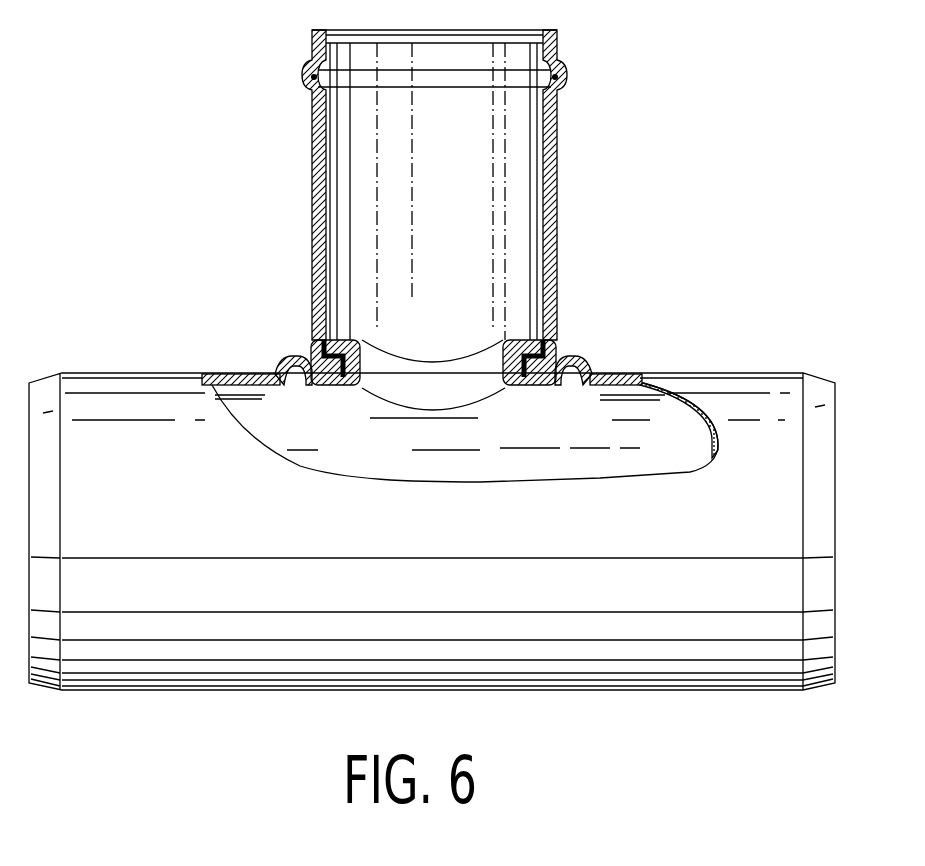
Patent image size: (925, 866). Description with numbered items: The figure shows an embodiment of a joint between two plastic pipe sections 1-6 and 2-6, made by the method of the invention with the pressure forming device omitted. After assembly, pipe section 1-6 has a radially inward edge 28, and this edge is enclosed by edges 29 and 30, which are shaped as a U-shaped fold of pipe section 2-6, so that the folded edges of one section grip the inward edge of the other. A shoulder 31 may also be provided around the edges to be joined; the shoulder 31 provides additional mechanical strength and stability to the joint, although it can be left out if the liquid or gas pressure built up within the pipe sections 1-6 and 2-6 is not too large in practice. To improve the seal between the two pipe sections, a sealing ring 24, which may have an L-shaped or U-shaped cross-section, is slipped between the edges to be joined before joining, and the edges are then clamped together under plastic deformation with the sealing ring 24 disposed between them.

The pipe section 1-6 is at (545, 163).
The pipe section 2-6 is at (730, 398).
The sealing ring 24 is at (517, 390).
The radially inward edge 28 is at (322, 392).
The edge 29 is at (340, 385).
The edge 30 is at (338, 340).
The shoulder 31 is at (575, 355).